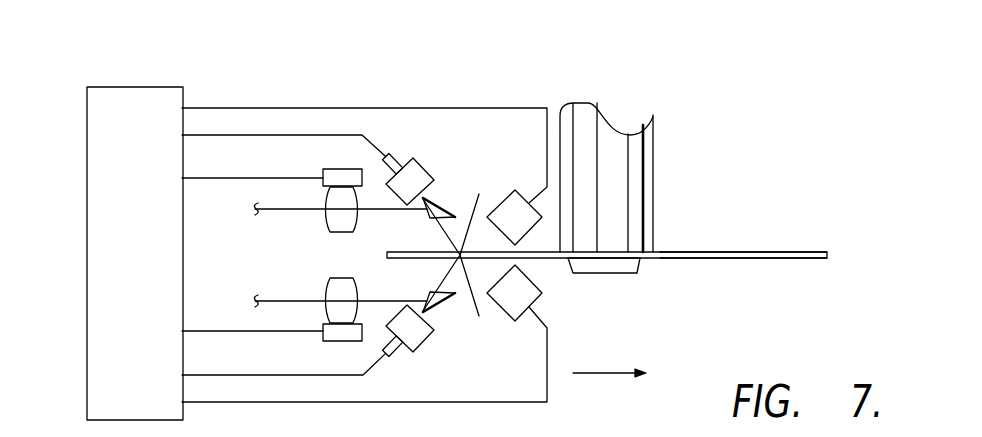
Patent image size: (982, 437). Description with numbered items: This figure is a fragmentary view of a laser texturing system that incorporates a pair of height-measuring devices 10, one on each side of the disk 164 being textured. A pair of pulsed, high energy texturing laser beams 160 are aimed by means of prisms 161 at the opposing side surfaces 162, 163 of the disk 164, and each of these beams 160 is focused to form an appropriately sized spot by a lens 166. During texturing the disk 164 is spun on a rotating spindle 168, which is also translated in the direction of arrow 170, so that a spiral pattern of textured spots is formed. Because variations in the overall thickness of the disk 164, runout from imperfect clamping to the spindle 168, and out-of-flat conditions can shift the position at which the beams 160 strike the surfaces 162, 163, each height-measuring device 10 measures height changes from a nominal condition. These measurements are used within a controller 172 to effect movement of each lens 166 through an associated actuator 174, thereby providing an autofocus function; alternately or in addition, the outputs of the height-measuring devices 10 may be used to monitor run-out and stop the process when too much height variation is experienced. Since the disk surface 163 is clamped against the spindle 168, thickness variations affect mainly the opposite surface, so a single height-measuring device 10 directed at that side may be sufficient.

The height-measuring device 10 is at (468, 331).
The texturing laser beam 160 is at (257, 300).
The prism 161 is at (453, 217).
The side surface of disk 162 is at (723, 259).
The side surface of disk 163 is at (740, 252).
The disk 164 is at (788, 259).
The lens 166 is at (352, 277).
The rotating spindle 168 is at (655, 173).
The arrow 170 is at (597, 375).
The controller 172 is at (155, 87).
The actuator 174 is at (327, 343).